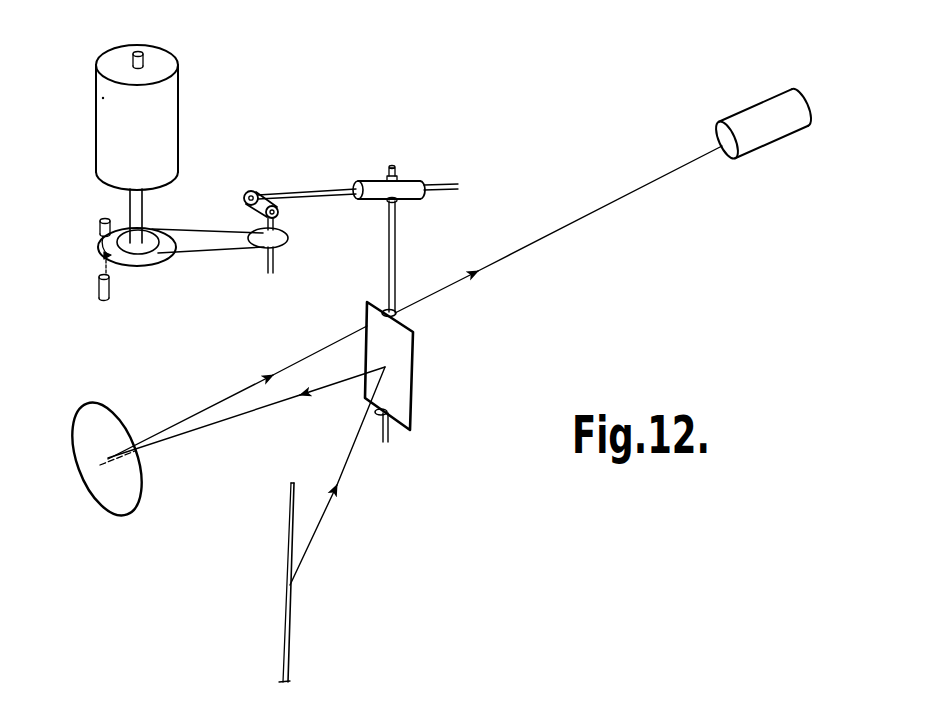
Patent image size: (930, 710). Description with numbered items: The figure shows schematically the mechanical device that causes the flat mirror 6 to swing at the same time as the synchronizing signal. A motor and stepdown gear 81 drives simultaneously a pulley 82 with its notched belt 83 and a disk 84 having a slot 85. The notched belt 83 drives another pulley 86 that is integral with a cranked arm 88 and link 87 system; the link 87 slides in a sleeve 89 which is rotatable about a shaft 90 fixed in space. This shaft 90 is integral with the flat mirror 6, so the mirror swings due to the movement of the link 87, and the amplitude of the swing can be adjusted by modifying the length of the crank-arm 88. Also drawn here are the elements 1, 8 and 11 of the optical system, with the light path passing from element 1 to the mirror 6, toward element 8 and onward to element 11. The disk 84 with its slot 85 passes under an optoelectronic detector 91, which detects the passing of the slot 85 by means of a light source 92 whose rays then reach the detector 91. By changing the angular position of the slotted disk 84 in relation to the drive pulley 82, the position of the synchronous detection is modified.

The element 1 is at (294, 595).
The flat mirror 6 is at (405, 360).
The element 8 is at (107, 433).
The element 11 is at (760, 131).
The motor and stepdown gear 81 is at (160, 102).
The pulley 82 is at (160, 229).
The notched belt 83 is at (218, 251).
The disk 84 is at (142, 263).
The slot 85 is at (102, 255).
The pulley 86 is at (281, 240).
The link 87 is at (322, 189).
The cranked arm 88 is at (263, 204).
The sleeve 89 is at (420, 184).
The shaft 90 is at (394, 251).
The optoelectronic detector 91 is at (100, 228).
The light source 92 is at (100, 287).